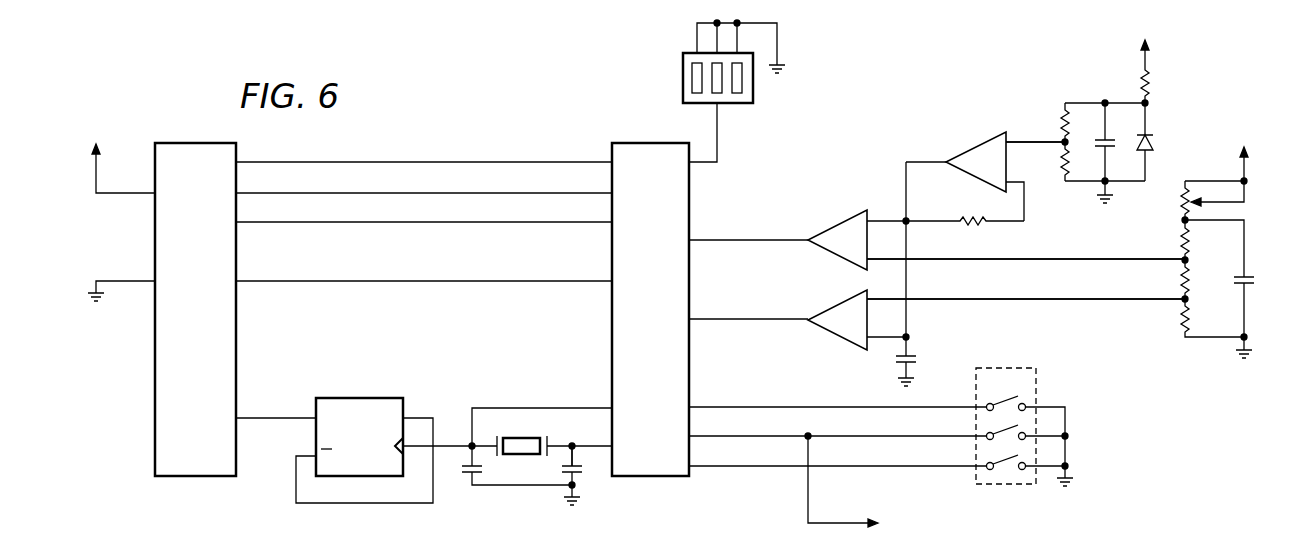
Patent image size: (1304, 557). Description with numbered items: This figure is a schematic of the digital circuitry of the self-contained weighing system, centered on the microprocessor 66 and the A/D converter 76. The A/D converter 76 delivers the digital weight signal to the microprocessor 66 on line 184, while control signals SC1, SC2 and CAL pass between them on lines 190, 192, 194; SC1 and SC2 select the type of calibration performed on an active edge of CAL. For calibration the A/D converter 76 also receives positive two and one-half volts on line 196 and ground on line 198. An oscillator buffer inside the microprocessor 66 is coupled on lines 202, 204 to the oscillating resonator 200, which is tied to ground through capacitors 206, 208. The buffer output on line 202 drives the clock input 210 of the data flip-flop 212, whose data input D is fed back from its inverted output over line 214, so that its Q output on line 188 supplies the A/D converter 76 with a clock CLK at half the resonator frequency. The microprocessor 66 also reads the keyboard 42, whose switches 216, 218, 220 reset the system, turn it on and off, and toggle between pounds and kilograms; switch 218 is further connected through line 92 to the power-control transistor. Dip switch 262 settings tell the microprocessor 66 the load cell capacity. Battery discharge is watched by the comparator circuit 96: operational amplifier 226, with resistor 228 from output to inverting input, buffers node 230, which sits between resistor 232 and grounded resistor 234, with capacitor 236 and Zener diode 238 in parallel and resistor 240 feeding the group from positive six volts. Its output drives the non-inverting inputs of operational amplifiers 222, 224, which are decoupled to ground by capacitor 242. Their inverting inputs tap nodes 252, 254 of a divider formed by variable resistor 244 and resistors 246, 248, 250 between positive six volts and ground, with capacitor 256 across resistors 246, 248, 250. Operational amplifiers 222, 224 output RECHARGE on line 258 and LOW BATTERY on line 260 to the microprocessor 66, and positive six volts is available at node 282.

The A/D converter 76 is at (219, 466).
The microprocessor 66 is at (684, 464).
The line 196 is at (120, 192).
The line 198 is at (107, 281).
The line 190 is at (476, 160).
The line 192 is at (500, 191).
The line 194 is at (507, 223).
The line 184 is at (507, 283).
The line 188 is at (288, 416).
The data flip-flop 212 is at (375, 449).
The clock input 210 is at (405, 449).
The line 214 is at (296, 503).
The oscillating resonator 200 is at (518, 436).
The line 202 is at (565, 408).
The line 204 is at (590, 450).
The capacitor 206 is at (468, 474).
The capacitor 208 is at (560, 475).
The dip switch 262 is at (683, 72).
The comparator circuit 96 is at (890, 92).
The line 258 is at (790, 239).
The operational amplifier 222 is at (854, 213).
The line 260 is at (733, 321).
The operational amplifier 224 is at (838, 305).
The capacitor 242 is at (914, 358).
The operational amplifier 226 is at (970, 148).
The resistor 228 is at (988, 223).
The node 230 is at (1062, 142).
The resistor 232 is at (1062, 118).
The resistor 234 is at (1064, 178).
The capacitor 236 is at (1100, 138).
The Zener diode 238 is at (1156, 144).
The resistor 240 is at (1150, 86).
The variable resistor 244 is at (1182, 203).
The resistor 246 is at (1182, 246).
The resistor 248 is at (1182, 280).
The resistor 250 is at (1182, 330).
The node 252 is at (1182, 259).
The node 254 is at (1182, 300).
The capacitor 256 is at (1250, 282).
The keyboard 42 is at (1012, 391).
The switch 216 is at (1025, 400).
The switch 218 is at (996, 440).
The switch 220 is at (998, 466).
The line 92 is at (828, 522).
The node 282 is at (653, 549).